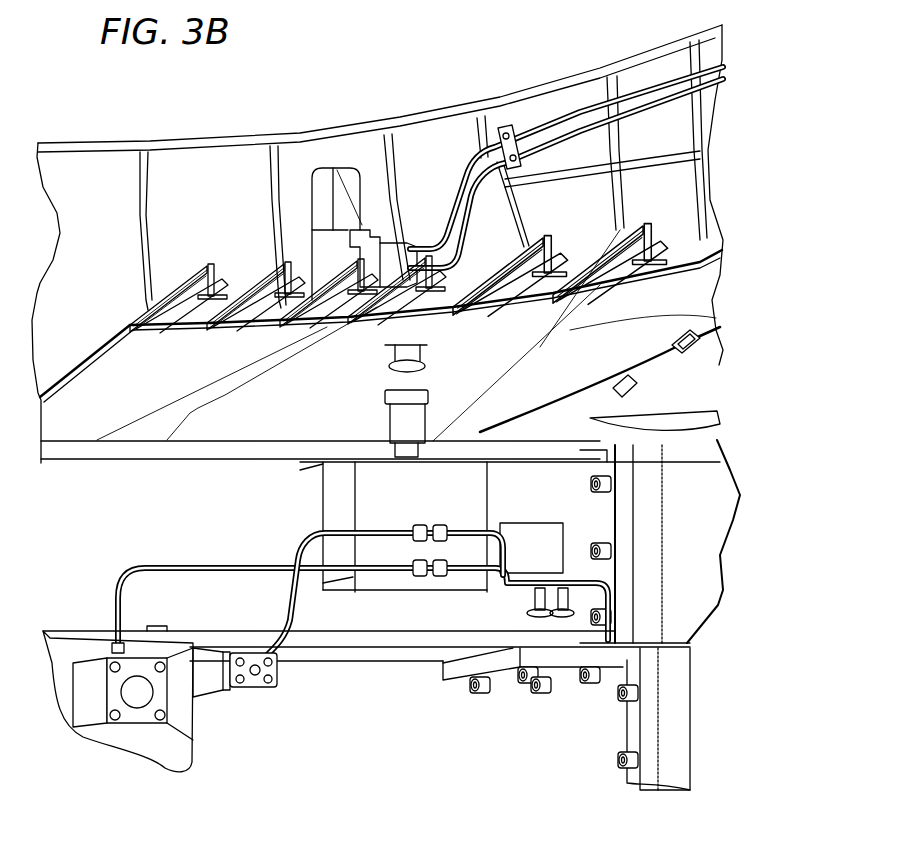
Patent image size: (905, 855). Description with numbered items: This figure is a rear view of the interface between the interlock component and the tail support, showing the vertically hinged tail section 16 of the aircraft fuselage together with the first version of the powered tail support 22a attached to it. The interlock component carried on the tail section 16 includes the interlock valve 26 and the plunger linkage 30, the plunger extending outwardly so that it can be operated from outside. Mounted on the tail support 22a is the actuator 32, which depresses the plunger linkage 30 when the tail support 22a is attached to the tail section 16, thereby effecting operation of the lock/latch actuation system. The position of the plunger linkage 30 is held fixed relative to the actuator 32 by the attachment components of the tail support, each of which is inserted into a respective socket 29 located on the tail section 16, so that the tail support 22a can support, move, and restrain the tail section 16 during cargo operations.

The interlock valve 26 is at (368, 246).
The socket 29 is at (707, 340).
The tail section 16 is at (720, 423).
The plunger linkage 30 is at (390, 363).
The actuator 32 is at (390, 418).
The tail support 22a is at (390, 663).